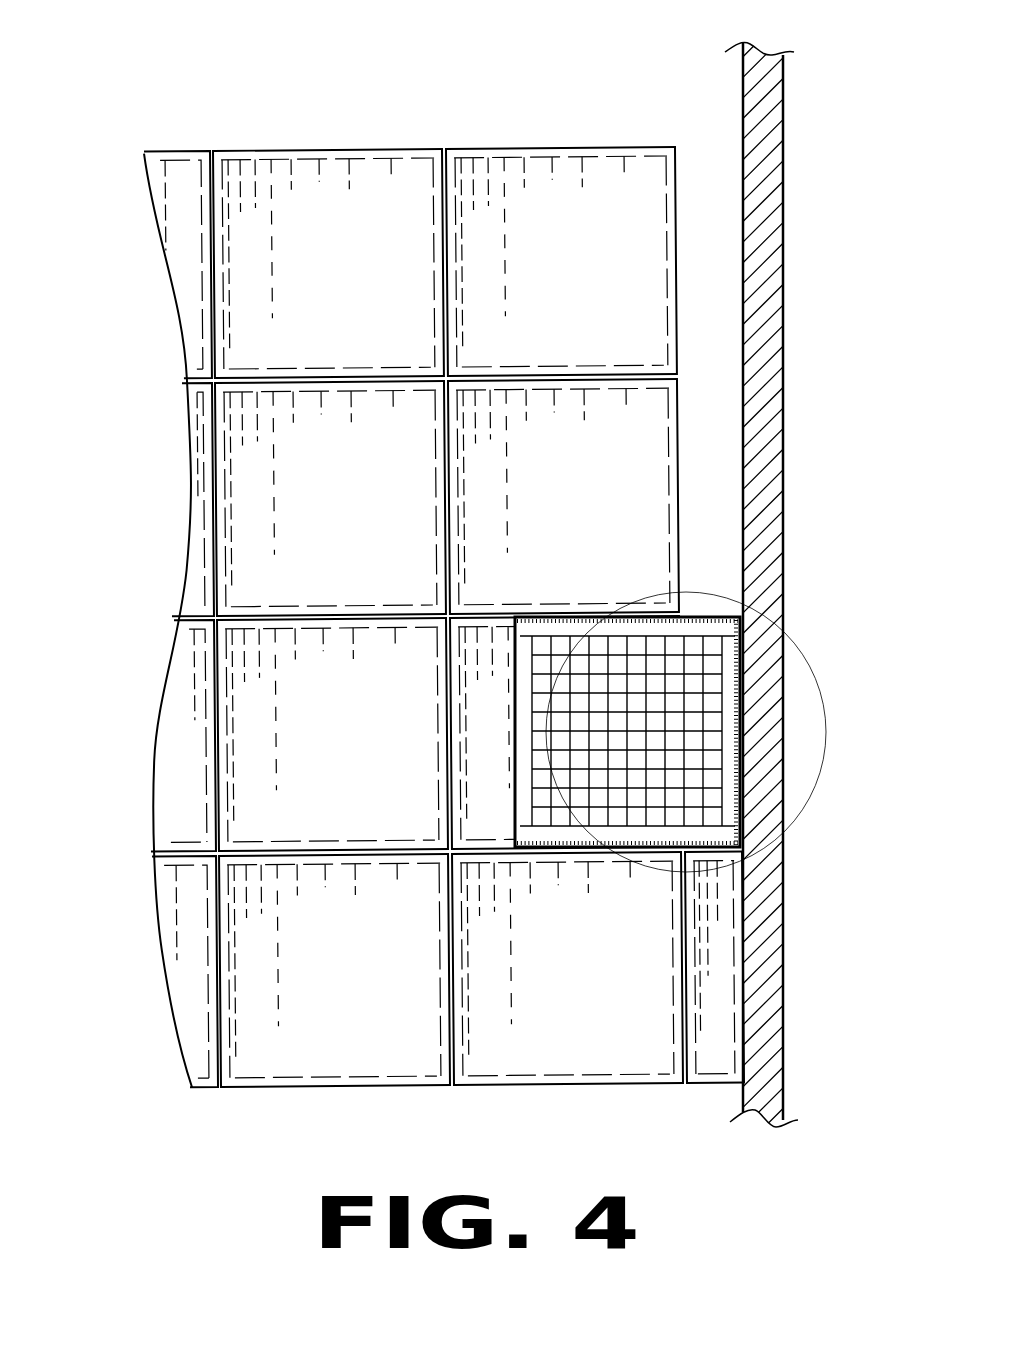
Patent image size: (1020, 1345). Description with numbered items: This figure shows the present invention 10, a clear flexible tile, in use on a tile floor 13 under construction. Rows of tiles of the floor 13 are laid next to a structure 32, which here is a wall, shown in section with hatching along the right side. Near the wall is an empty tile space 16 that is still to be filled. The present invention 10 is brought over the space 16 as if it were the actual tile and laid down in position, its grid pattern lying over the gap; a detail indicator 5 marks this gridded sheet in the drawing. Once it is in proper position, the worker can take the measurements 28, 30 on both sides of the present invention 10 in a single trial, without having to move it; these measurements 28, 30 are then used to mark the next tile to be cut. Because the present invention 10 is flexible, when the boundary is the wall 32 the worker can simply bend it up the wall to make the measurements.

The detail view indicator (FIG. 5) / tile spacing gauge 5 is at (705, 622).
The present invention 10 is at (402, 544).
The tile floor 13 is at (292, 245).
The empty tile space 16 is at (822, 574).
The measurement 28 is at (692, 855).
The measurement 30 is at (707, 565).
The structure 32 is at (770, 945).